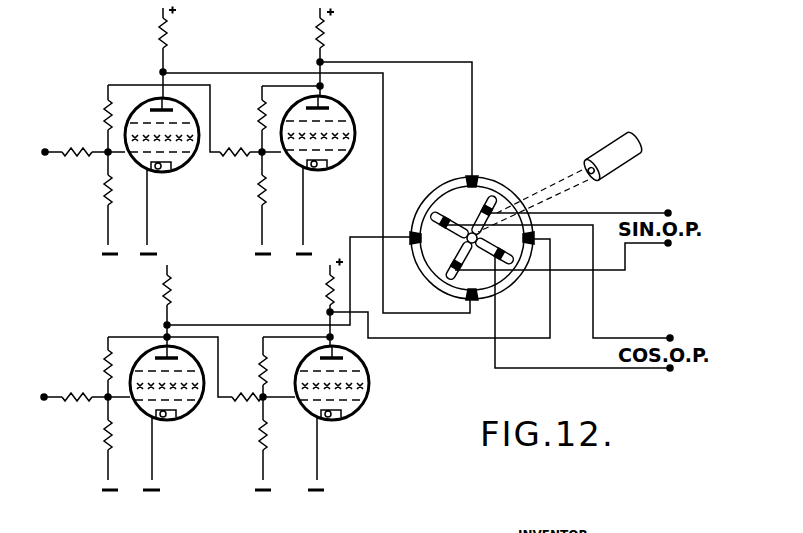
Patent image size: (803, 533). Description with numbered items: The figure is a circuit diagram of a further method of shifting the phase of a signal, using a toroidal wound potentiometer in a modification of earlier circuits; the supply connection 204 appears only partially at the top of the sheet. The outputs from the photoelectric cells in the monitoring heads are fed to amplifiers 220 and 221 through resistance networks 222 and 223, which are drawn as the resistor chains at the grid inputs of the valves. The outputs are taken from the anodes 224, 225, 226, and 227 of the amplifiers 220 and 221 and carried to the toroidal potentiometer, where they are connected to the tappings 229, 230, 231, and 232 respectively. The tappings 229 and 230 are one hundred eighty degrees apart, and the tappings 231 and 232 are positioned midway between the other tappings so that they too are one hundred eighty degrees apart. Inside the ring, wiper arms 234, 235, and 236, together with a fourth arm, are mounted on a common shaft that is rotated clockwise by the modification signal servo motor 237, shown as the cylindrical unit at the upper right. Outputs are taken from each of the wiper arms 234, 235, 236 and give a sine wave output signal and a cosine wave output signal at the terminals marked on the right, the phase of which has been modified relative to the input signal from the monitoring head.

The circuit supply connection 204 is at (216, 137).
The amplifier 220 is at (142, 97).
The amplifier 221 is at (145, 348).
The resistance network 222 is at (106, 153).
The resistance network 223 is at (106, 398).
The anode 224 is at (170, 108).
The anode 225 is at (325, 107).
The anode 226 is at (173, 357).
The anode 227 is at (333, 364).
The tapping 229 is at (470, 300).
The tapping 230 is at (479, 178).
The tapping 231 is at (415, 236).
The tapping 232 is at (500, 202).
The wiper arm 234 is at (516, 272).
The wiper arm 235 is at (446, 274).
The wiper arm 236 is at (447, 219).
The modification signal servo motor 237 is at (612, 147).